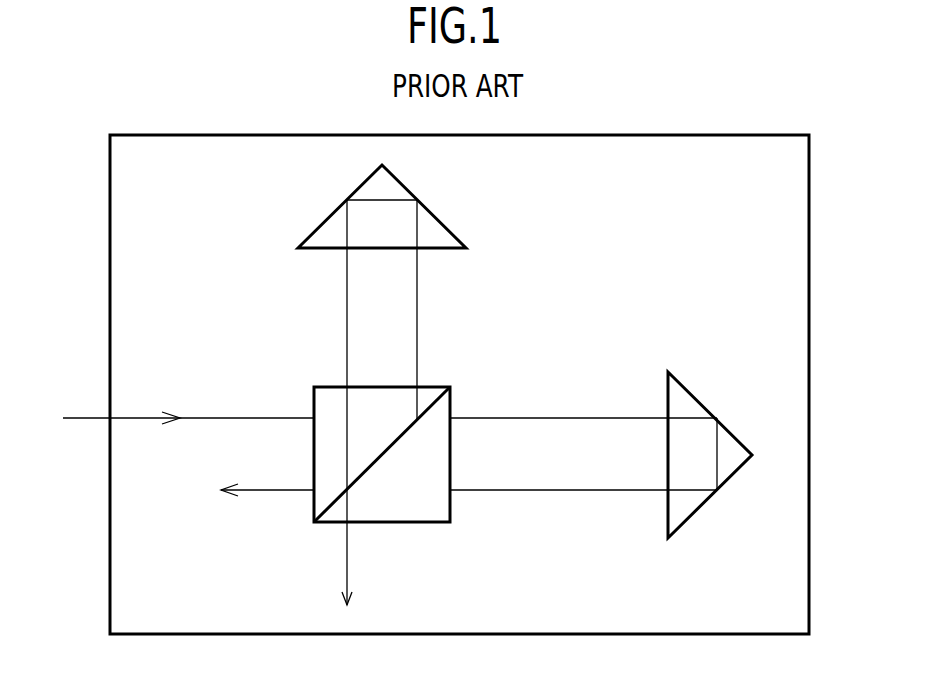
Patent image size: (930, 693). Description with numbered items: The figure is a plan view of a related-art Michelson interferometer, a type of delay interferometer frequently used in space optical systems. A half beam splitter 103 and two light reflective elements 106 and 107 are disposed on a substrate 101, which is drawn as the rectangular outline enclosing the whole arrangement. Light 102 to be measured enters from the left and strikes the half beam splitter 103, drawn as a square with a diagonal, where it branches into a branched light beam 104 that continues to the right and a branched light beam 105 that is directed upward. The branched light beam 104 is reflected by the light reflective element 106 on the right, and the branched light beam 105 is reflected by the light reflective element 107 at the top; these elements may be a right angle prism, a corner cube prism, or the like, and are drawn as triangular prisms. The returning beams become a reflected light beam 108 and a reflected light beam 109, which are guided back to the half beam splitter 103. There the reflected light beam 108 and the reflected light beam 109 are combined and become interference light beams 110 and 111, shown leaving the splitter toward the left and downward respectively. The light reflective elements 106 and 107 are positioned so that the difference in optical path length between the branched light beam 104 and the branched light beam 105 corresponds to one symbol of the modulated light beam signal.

The substrate 101 is at (110, 268).
The light to be measured 102 is at (90, 420).
The half beam splitter 103 is at (418, 524).
The branched light beam 104 is at (568, 417).
The branched light beam 105 is at (418, 310).
The light reflective element 106 is at (705, 503).
The light reflective element 107 is at (330, 221).
The reflected light beam 108 is at (568, 492).
The reflected light beam 109 is at (347, 310).
The interference light beam 110 is at (260, 492).
The interference light beam 111 is at (345, 574).